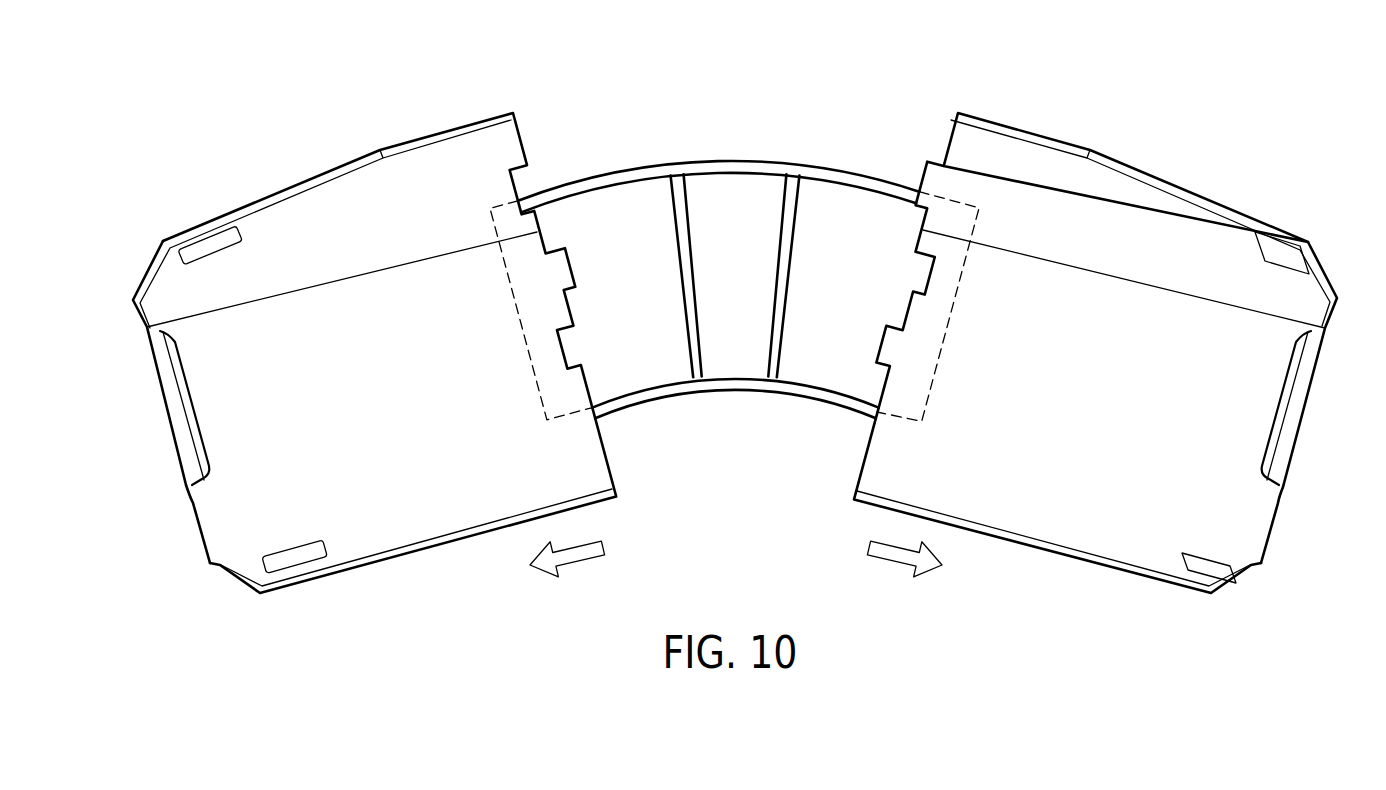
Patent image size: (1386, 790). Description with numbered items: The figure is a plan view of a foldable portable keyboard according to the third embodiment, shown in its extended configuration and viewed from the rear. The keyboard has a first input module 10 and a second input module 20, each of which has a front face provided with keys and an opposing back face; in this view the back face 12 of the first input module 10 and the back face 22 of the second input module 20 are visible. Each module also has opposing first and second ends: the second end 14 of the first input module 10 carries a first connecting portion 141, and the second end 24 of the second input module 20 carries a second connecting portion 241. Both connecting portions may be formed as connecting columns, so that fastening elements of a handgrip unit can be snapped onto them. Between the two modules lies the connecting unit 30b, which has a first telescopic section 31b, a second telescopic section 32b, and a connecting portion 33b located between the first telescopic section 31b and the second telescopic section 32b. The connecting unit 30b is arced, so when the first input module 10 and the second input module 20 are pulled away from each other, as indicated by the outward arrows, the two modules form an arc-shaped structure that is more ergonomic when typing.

The first input module 10 is at (1116, 351).
The back face 12 is at (1078, 512).
The second end 14 is at (1305, 478).
The first connecting portion 141 is at (1298, 405).
The second input module 20 is at (354, 351).
The back face 22 is at (395, 512).
The second end 24 is at (168, 480).
The second connecting portion 241 is at (172, 405).
The connecting unit 30b is at (718, 235).
The first telescopic section 31b is at (627, 203).
The second telescopic section 32b is at (846, 251).
The connecting portion 33b is at (735, 200).